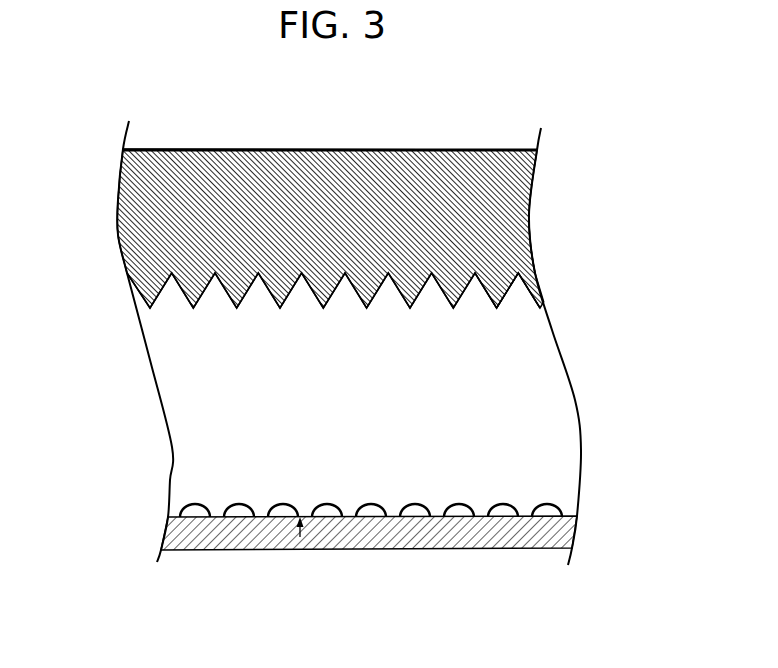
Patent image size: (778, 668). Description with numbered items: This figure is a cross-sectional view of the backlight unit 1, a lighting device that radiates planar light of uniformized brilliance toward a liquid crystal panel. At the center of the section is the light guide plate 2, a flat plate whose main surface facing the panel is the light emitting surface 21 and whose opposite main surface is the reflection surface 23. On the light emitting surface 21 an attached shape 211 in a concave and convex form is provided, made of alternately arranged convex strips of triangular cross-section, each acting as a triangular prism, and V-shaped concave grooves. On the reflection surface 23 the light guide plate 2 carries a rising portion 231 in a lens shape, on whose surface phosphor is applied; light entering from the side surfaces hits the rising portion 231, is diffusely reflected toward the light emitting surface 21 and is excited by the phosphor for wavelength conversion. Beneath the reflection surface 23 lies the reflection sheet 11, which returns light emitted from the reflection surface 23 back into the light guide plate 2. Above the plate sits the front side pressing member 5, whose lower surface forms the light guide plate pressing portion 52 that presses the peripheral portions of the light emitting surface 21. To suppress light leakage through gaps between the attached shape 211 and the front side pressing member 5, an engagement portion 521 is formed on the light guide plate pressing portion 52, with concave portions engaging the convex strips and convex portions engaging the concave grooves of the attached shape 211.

The backlight unit 1 is at (240, 110).
The light guide plate 2 is at (202, 418).
The front side pressing member 5 is at (365, 150).
The reflection sheet 11 is at (180, 530).
The light emitting surface 21 is at (150, 223).
The reflection surface 23 is at (297, 550).
The light guide plate pressing portion 52 is at (490, 250).
The attached shape 211 is at (487, 301).
The rising portion 231 is at (423, 503).
The engagement portion 521 is at (524, 274).